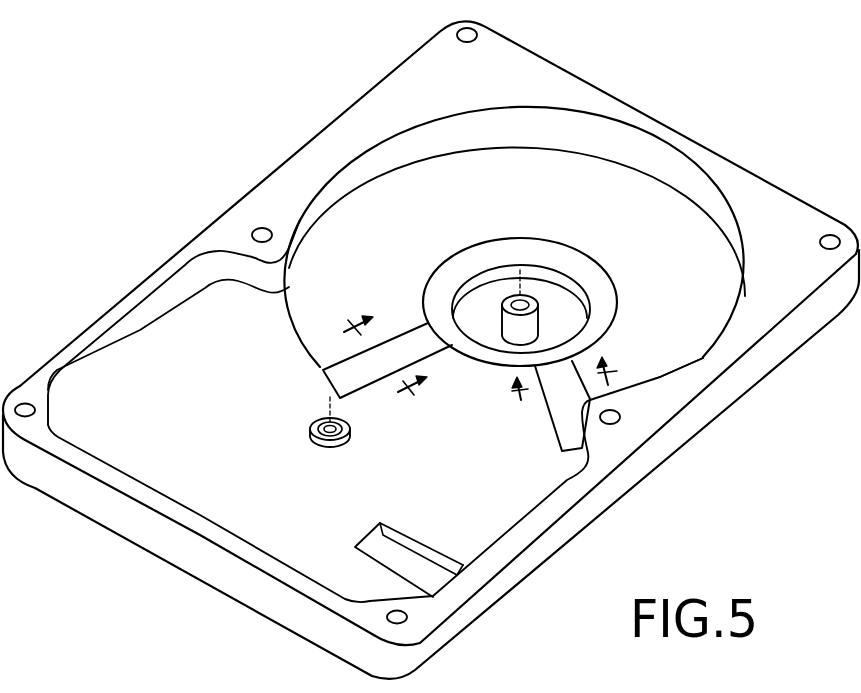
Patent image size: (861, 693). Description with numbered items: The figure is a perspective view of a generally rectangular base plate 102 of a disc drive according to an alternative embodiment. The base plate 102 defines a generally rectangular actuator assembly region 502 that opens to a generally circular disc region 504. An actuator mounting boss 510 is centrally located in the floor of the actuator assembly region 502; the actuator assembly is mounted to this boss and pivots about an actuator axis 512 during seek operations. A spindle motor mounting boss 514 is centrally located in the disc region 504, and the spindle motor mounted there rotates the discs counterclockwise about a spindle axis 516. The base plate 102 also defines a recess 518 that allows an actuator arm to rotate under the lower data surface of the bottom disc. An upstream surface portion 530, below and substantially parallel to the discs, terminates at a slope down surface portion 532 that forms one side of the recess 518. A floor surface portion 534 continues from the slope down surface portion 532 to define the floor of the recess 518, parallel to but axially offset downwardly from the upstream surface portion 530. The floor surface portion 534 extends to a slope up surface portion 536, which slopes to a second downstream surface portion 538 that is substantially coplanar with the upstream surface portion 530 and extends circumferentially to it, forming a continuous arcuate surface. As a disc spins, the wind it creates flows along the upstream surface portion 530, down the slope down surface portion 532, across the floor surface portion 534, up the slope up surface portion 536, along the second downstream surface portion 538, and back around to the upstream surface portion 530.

The base plate 102 is at (164, 137).
The actuator assembly region 502 is at (158, 362).
The disc region 504 is at (688, 338).
The actuator mounting boss 510 is at (313, 426).
The actuator axis 512 is at (332, 397).
The spindle motor mounting boss 514 is at (512, 301).
The spindle axis 516 is at (521, 281).
The recess 518 is at (490, 415).
The upstream surface portion 530 is at (408, 263).
The slope down surface portion 532 is at (416, 334).
The floor surface portion 534 is at (482, 401).
The slope up surface portion 536 is at (558, 402).
The second downstream surface portion 538 is at (661, 349).